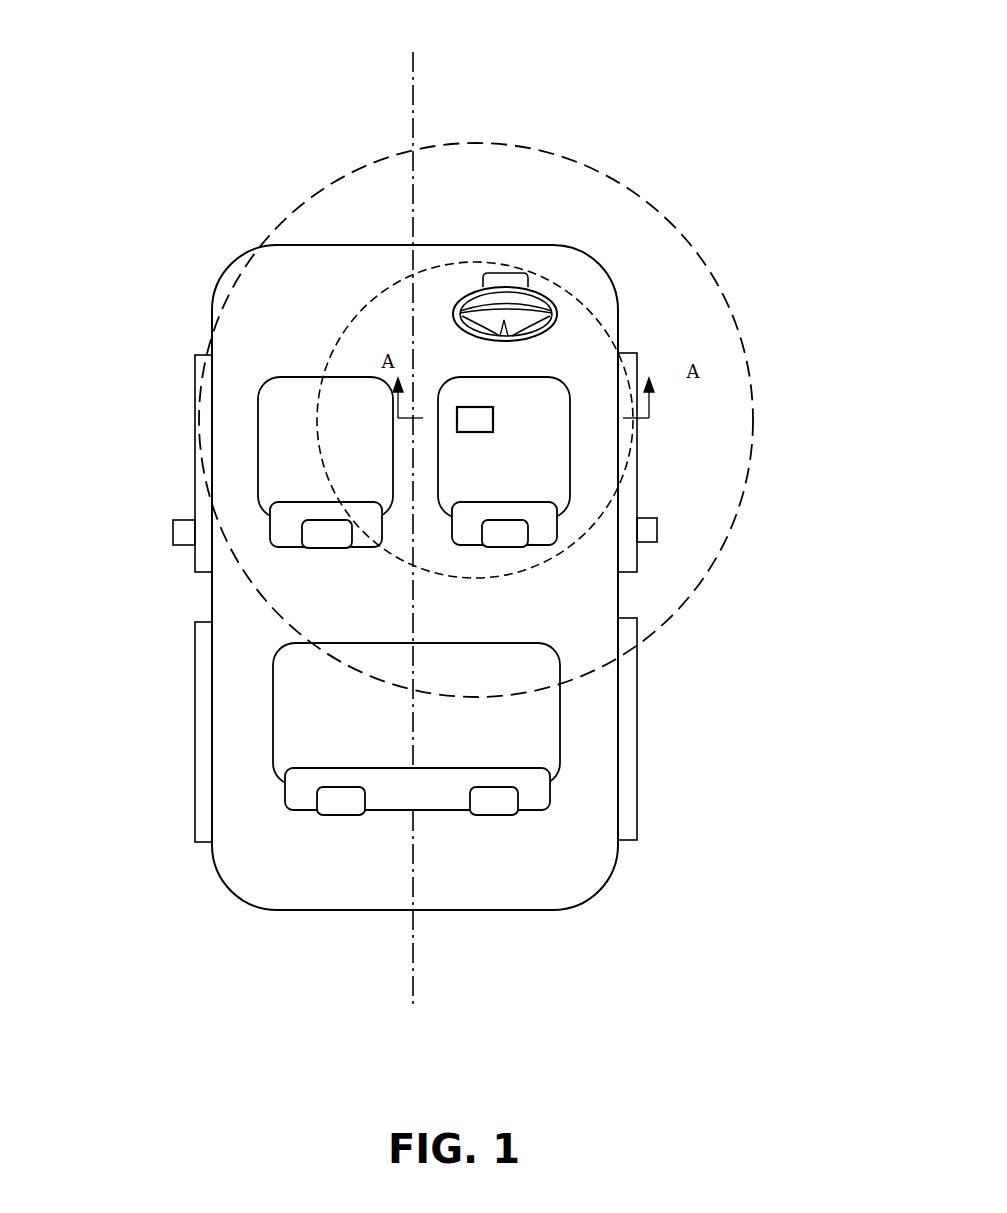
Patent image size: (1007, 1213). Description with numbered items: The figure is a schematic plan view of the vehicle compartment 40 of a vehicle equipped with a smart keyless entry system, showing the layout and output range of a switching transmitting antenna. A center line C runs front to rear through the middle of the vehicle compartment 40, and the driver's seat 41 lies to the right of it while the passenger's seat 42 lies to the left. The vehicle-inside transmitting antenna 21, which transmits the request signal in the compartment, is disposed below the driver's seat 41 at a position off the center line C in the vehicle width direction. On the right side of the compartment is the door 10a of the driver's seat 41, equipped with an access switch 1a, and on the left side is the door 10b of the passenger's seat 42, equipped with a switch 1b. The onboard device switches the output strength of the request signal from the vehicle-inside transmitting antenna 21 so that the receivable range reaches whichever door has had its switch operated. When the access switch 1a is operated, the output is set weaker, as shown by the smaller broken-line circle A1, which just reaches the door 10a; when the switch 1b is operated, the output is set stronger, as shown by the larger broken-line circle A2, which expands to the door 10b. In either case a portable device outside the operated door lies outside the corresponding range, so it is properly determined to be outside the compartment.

The vehicle compartment 40 is at (607, 878).
The driver's seat 41 is at (540, 533).
The passenger's seat 42 is at (290, 537).
The door of the driver's seat 10a is at (635, 367).
The door of the passenger's seat 10b is at (193, 383).
The access switch 1a is at (657, 530).
The switch 1b is at (173, 532).
The vehicle-inside transmitting antenna 21 is at (482, 420).
The output range A1 is at (375, 296).
The output range A2 is at (637, 192).
The center line C is at (415, 523).